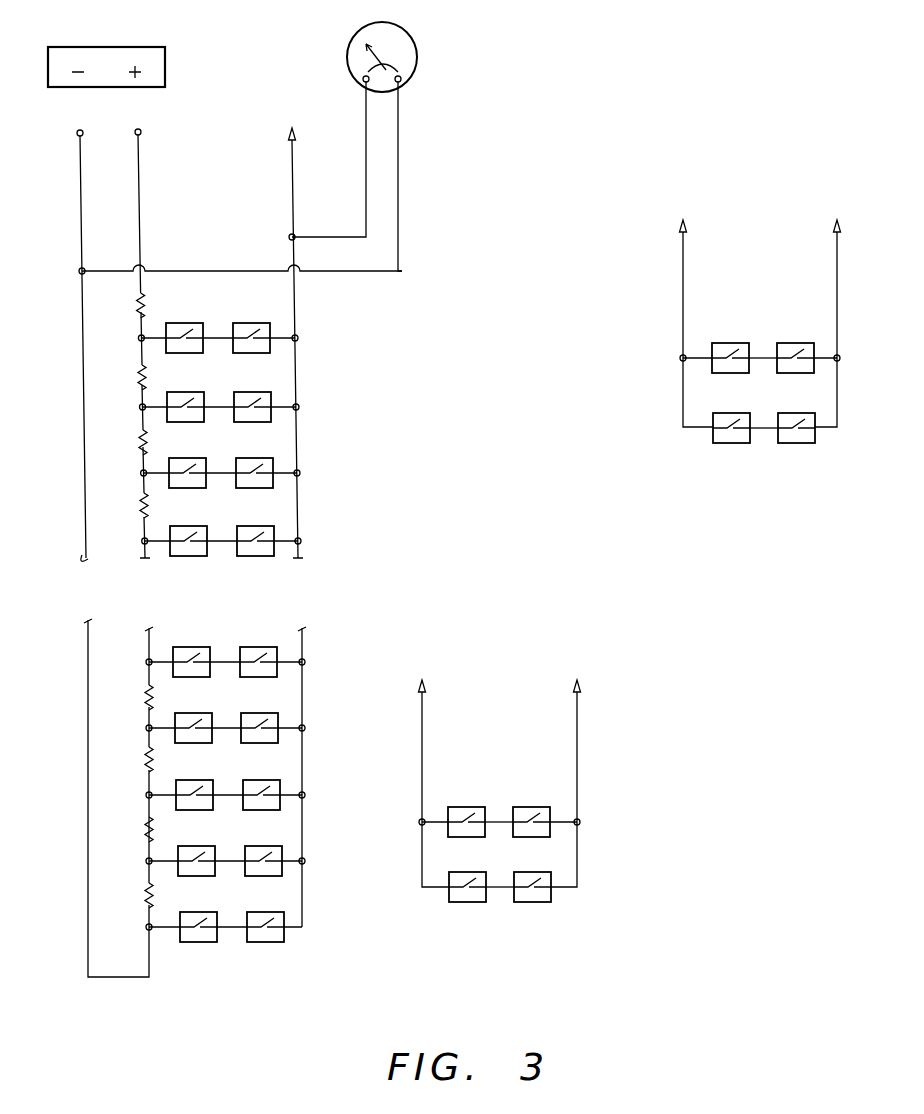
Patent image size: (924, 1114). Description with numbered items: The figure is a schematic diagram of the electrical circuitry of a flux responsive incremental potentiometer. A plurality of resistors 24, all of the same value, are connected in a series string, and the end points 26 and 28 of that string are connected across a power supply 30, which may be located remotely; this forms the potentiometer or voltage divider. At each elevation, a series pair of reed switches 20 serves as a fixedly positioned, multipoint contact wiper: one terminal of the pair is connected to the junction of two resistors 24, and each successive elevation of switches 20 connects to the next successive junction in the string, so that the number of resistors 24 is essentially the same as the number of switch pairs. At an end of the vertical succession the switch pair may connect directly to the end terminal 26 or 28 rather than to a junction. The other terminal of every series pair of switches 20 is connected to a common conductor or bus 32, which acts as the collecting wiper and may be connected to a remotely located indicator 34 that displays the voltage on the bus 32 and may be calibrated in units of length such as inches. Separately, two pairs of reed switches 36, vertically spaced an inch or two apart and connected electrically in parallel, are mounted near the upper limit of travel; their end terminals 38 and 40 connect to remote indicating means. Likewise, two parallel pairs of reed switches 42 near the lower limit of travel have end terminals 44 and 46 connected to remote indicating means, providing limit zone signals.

The reed switches 20 is at (241, 323).
The resistors 24 is at (139, 375).
The end point 26 is at (231, 330).
The end point 28 is at (135, 329).
The power supply 30 is at (165, 50).
The bus 32 is at (290, 328).
The indicator 34 is at (416, 45).
The reed switches 36 is at (787, 343).
The terminal 38 is at (688, 309).
The terminal 40 is at (829, 309).
The reed switches 42 is at (523, 807).
The end terminal 44 is at (422, 770).
The end terminal 46 is at (569, 770).